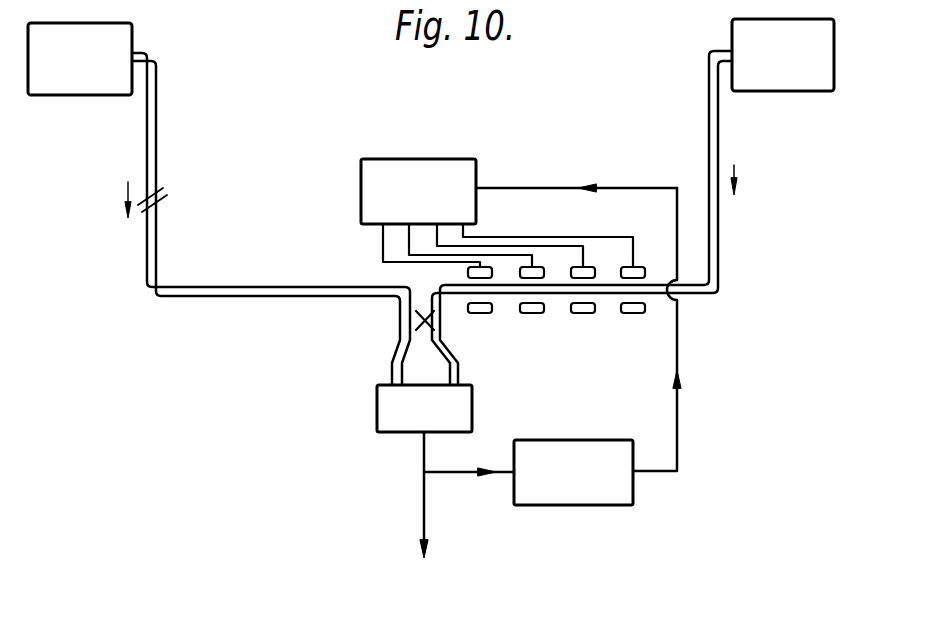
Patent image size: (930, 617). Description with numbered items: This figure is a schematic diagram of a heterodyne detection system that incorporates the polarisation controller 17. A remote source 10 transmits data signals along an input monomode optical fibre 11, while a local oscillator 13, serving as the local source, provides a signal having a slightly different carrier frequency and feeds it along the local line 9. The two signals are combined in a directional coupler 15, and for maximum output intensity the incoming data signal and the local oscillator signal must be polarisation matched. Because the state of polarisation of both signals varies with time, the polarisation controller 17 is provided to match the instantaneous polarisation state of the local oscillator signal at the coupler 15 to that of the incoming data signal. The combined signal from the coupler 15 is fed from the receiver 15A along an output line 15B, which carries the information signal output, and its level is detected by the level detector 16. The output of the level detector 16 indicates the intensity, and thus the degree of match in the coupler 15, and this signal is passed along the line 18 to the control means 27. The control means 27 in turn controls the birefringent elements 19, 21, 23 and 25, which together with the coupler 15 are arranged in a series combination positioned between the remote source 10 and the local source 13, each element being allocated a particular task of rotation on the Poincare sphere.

The local optical transmission line 9 is at (703, 297).
The remote source 10 is at (45, 96).
The input monomode optical fibre 11 is at (243, 297).
The local oscillator 13 is at (801, 92).
The directional coupler 15 is at (405, 333).
The receiver 15A is at (377, 407).
The output line 15B is at (422, 497).
The level detector 16 is at (613, 506).
The polarisation controller 17 is at (603, 160).
The line 18 is at (680, 418).
The birefringent element 19 is at (645, 307).
The birefringent element 21 is at (595, 307).
The birefringent element 23 is at (544, 307).
The birefringent element 25 is at (492, 307).
The control means 27 is at (455, 147).